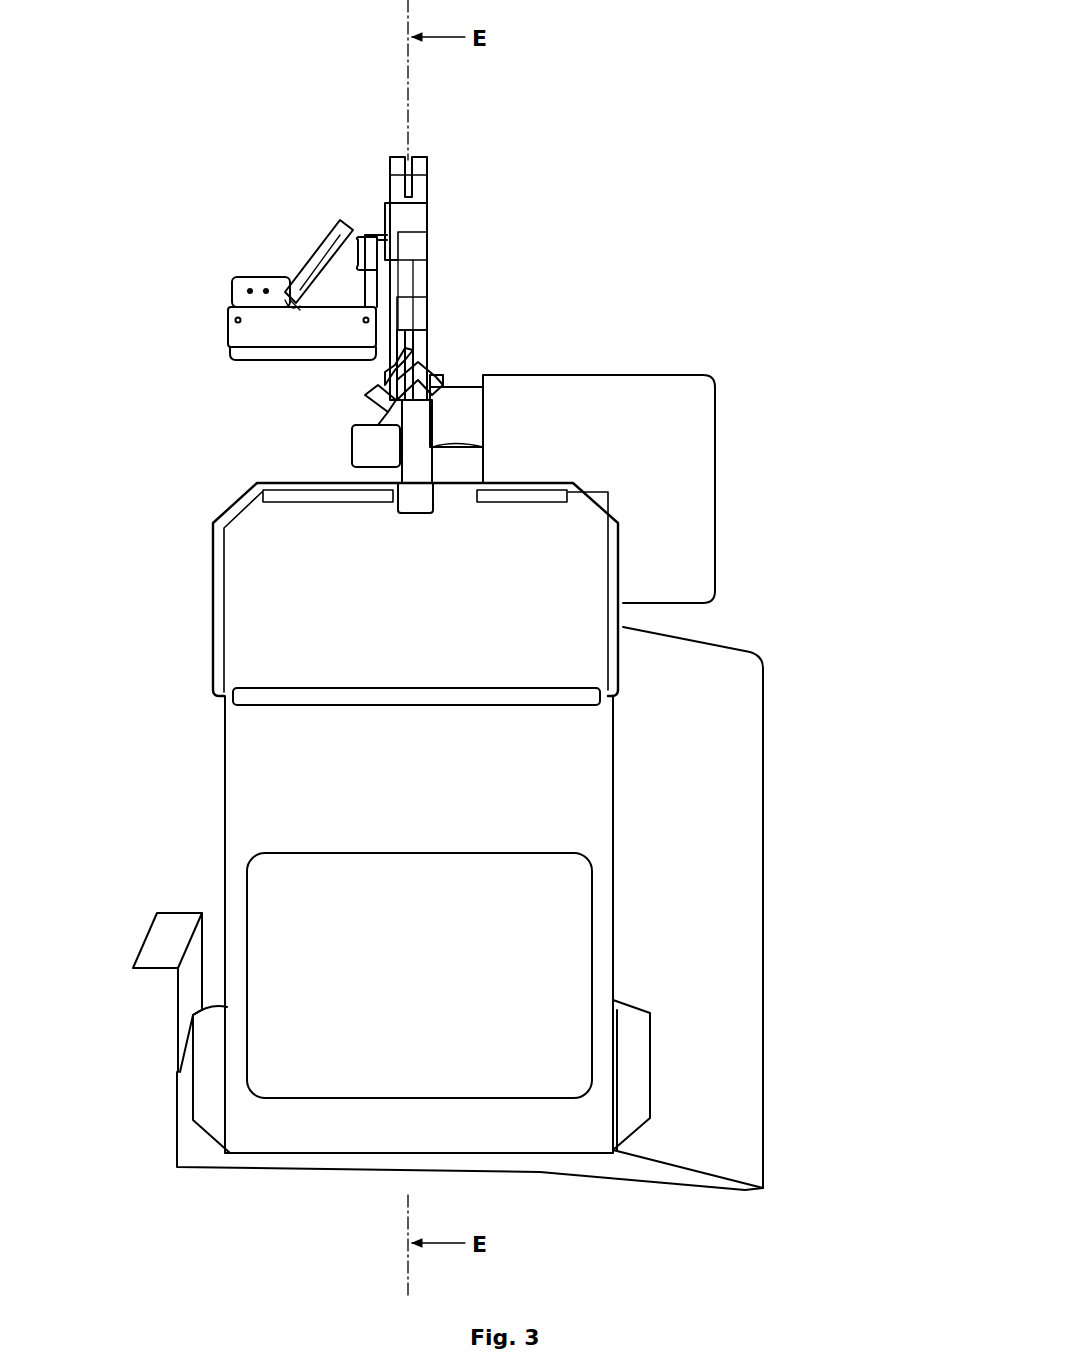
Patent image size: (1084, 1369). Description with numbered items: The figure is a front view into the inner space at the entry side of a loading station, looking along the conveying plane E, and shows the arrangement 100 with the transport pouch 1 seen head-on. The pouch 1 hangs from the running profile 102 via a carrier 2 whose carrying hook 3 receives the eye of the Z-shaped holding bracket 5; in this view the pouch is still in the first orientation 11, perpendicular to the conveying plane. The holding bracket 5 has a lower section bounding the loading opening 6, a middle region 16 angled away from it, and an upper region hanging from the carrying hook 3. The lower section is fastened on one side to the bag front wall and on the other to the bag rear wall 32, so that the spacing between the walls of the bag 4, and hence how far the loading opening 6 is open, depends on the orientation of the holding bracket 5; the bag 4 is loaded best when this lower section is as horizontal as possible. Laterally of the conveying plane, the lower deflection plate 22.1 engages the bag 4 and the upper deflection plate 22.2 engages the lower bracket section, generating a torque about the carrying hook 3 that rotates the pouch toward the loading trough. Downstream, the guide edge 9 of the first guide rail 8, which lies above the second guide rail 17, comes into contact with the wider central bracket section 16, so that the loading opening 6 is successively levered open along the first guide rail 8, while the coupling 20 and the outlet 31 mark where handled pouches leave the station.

The dispensing system 100 is at (188, 128).
The running profile 102 is at (387, 168).
The carrier 2 is at (430, 282).
The carrying hook 3 is at (420, 353).
The outlet 31 is at (170, 365).
The first guide rail 8 is at (539, 425).
The guide edge 9 is at (539, 425).
The coupling 20 is at (447, 425).
The middle region of the holding bracket 16 is at (435, 462).
The second guide rail 17 is at (368, 472).
The holding bracket 5 is at (385, 392).
The transport pouch 1 is at (185, 777).
The loading opening 6 is at (265, 633).
The bag rear wall 32 is at (243, 578).
The bag 4 is at (255, 830).
The first orientation 11 is at (682, 622).
The upper deflection plate 22.2 is at (690, 455).
The lower deflection plate 22.1 is at (740, 845).